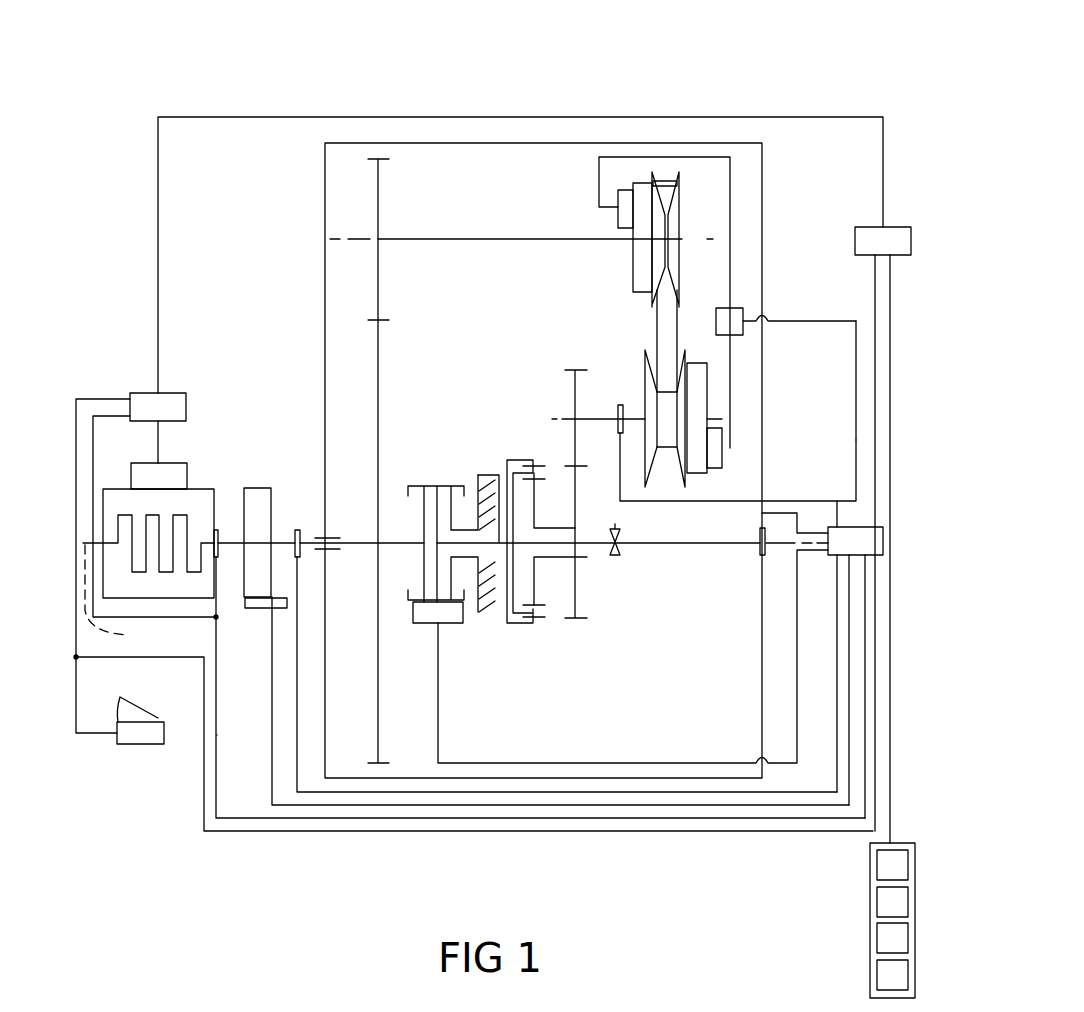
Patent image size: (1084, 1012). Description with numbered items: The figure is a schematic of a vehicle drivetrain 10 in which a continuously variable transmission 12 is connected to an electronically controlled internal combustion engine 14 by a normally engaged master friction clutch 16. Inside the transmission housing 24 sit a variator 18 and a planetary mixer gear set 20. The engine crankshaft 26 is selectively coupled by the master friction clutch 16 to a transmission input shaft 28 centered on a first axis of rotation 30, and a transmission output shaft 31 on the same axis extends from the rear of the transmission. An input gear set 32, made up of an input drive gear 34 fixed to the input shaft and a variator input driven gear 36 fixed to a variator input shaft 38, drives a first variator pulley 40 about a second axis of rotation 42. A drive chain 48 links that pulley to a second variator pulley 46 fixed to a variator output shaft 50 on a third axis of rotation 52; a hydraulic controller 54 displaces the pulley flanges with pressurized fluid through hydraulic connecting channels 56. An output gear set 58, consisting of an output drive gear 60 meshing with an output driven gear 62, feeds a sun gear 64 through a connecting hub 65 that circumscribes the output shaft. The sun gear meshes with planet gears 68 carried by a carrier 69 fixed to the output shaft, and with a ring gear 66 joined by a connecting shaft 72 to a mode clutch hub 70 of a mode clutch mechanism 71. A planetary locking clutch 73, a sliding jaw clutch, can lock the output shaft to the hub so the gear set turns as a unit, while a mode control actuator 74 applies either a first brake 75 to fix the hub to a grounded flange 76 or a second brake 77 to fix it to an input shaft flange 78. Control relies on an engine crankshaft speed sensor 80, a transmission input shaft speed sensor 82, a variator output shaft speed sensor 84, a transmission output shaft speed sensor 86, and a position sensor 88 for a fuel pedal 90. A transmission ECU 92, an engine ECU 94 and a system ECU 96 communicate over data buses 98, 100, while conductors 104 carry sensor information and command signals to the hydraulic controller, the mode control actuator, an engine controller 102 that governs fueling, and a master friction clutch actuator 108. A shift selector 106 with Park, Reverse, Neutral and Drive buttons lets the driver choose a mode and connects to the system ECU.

The vehicle drivetrain 10 is at (634, 95).
The continuously variable transmission 12 is at (325, 170).
The internal combustion engine 14 is at (116, 488).
The master friction clutch 16 is at (258, 488).
The variator 18 is at (522, 336).
The planetary mixer gear set 20 is at (490, 418).
The transmission housing 24 is at (325, 200).
The engine crankshaft 26 is at (210, 530).
The transmission input shaft 28 is at (328, 560).
The first axis of rotation 30 is at (122, 596).
The transmission output shaft 31 is at (720, 545).
The input gear set 32 is at (360, 302).
The input drive gear 34 is at (378, 343).
The variator input driven gear 36 is at (378, 208).
The variator input shaft 38 is at (503, 239).
The first variator pulley 40 is at (683, 195).
The second axis of rotation 42 is at (357, 243).
The second variator pulley 46 is at (695, 473).
The drive chain 48 is at (655, 328).
The variator output shaft 50 is at (600, 419).
The third axis of rotation 52 is at (712, 417).
The hydraulic controller 54 is at (786, 321).
The hydraulic connecting channels 56 is at (730, 232).
The output gear set 58 is at (558, 653).
The output drive gear 60 is at (575, 398).
The output driven gear 62 is at (577, 587).
The sun gear 64 is at (550, 625).
The connecting hub 65 is at (561, 560).
The ring gear 66 is at (520, 627).
The planet gears 68 is at (548, 483).
The carrier 69 is at (517, 473).
The mode clutch hub 70 is at (427, 626).
The mode clutch mechanism 71 is at (427, 650).
The connecting shaft 72 is at (499, 475).
The planetary locking clutch 73 is at (622, 540).
The mode control actuator 74 is at (450, 623).
The first brake 75 is at (452, 492).
The grounded flange 76 is at (452, 512).
The second brake 77 is at (415, 595).
The input shaft flange 78 is at (424, 560).
The engine crankshaft speed sensor 80 is at (215, 530).
The transmission input shaft speed sensor 82 is at (297, 530).
The variator output shaft speed sensor 84 is at (620, 400).
The transmission output shaft speed sensor 86 is at (768, 548).
The position sensor 88 is at (128, 744).
The fuel pedal 90 is at (135, 712).
The transmission electronic control unit 92 is at (855, 672).
The engine ECU 94 is at (158, 407).
The system ECU 96 is at (883, 241).
The data bus 98 is at (875, 300).
The data bus 100 is at (790, 118).
The engine controller 102 is at (159, 455).
The conductors 104 is at (93, 416).
The shift selector 106 is at (870, 913).
The master friction clutch actuator 108 is at (265, 608).